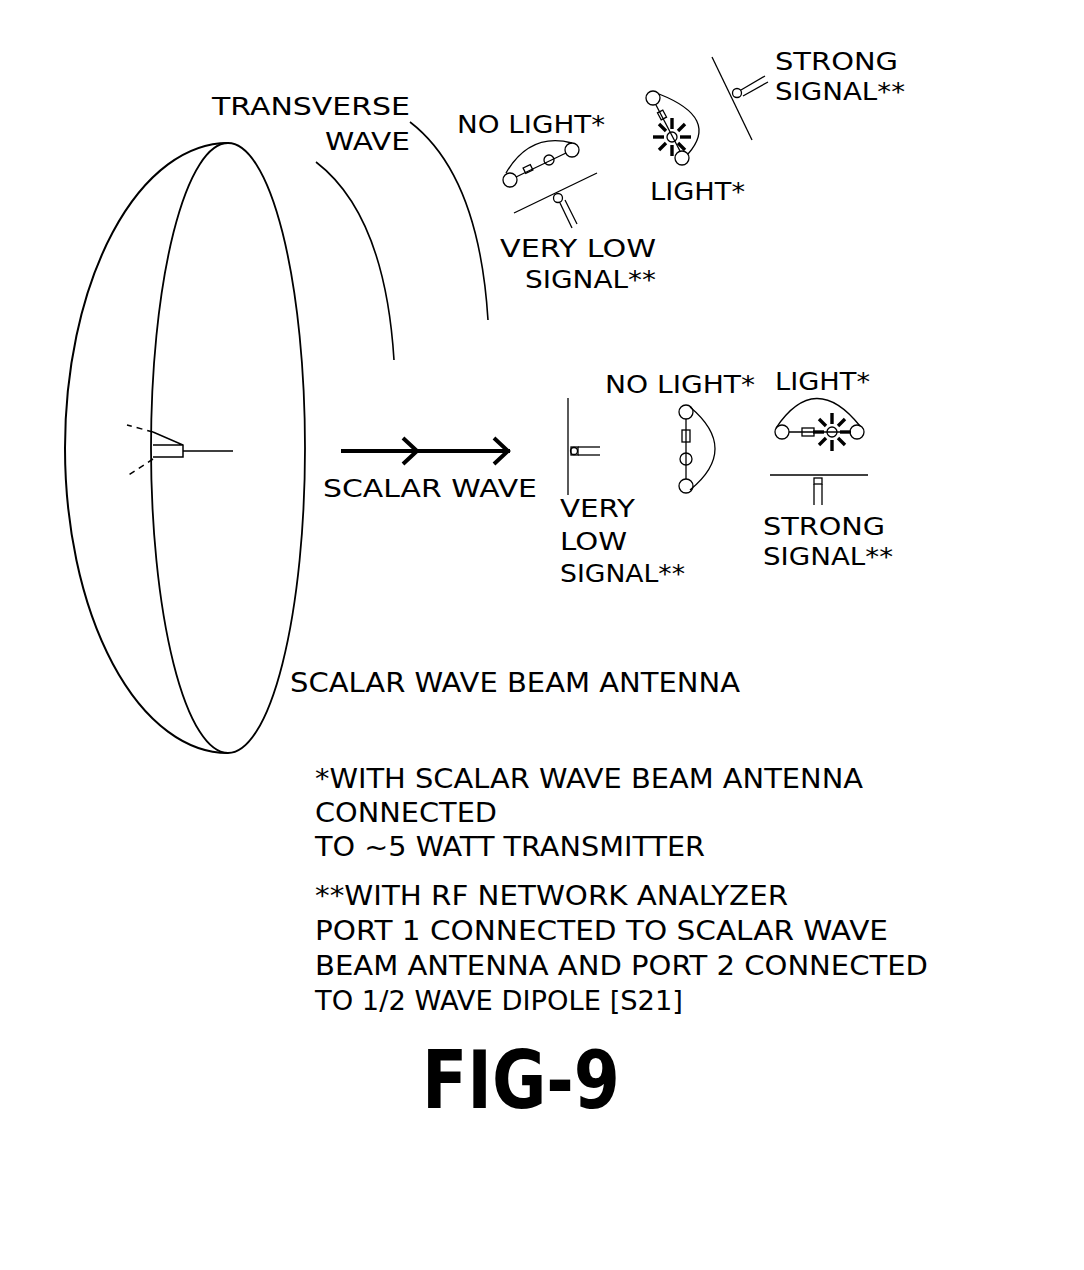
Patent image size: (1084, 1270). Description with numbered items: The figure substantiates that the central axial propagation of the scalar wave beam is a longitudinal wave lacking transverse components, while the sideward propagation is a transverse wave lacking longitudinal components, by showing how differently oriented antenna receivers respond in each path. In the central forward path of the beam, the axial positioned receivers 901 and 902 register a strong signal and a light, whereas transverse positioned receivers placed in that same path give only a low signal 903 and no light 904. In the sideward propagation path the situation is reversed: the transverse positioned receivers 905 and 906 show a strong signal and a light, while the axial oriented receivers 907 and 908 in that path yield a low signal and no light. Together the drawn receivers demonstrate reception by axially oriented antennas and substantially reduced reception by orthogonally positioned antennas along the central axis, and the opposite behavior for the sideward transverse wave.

The axial positioned receiver 901 is at (843, 476).
The axial positioned receiver 902 is at (843, 406).
The transverse positioned receiver with low signal 903 is at (570, 468).
The transverse positioned receiver with no light 904 is at (684, 446).
The transverse positioned receiver 905 is at (744, 60).
The transverse positioned receiver 906 is at (647, 96).
The axial oriented receiver 907 is at (573, 201).
The axial oriented receiver 908 is at (505, 176).